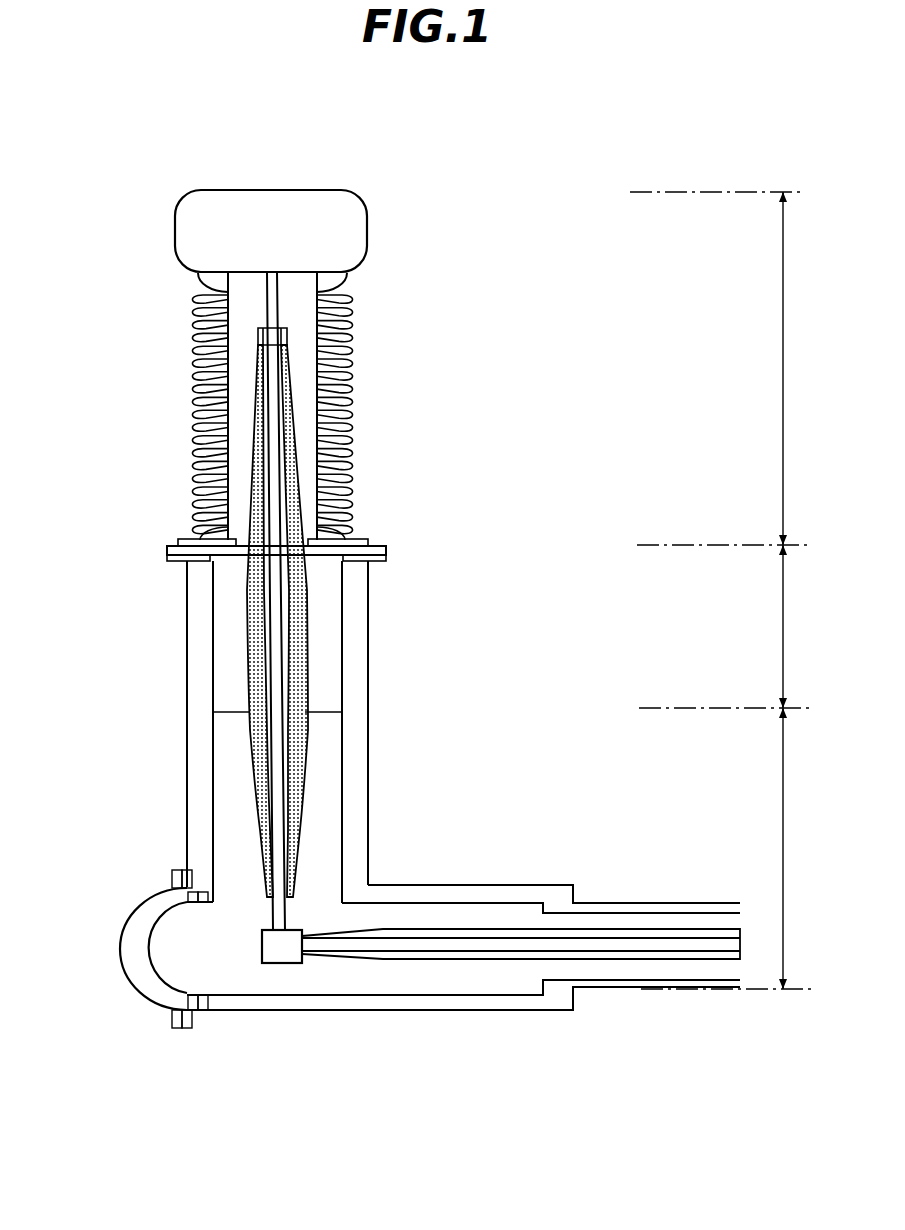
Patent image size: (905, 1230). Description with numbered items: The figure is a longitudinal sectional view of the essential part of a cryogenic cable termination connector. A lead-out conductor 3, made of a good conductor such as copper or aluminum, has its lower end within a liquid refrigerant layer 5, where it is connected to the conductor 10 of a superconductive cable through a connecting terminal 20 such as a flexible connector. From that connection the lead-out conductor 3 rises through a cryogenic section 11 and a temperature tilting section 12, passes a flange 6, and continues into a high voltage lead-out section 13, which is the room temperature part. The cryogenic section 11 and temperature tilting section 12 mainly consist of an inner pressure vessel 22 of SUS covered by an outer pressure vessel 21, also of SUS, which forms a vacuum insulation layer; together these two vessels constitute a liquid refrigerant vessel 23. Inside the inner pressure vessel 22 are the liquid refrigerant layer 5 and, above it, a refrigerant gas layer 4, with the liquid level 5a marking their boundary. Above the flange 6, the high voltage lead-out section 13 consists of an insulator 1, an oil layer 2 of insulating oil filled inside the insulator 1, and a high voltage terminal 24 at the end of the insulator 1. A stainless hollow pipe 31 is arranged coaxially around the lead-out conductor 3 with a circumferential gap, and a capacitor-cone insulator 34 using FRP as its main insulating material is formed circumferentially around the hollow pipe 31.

The insulator 1 is at (352, 331).
The oil layer 2 is at (303, 393).
The lead-out conductor 3 is at (275, 608).
The refrigerant gas layer 4 is at (330, 668).
The liquid refrigerant layer 5 is at (330, 790).
The liquid level 5a is at (323, 710).
The flange 6 is at (385, 547).
The conductor of superconductive cable 10 is at (435, 948).
The cryogenic section 11 is at (783, 825).
The temperature tilting section 12 is at (783, 624).
The high voltage lead-out section 13 is at (782, 355).
The connecting terminal 20 is at (280, 957).
The outer pressure vessel 21 is at (160, 887).
The inner pressure vessel 22 is at (142, 930).
The liquid refrigerant vessel 23 is at (86, 793).
The high voltage terminal 24 is at (362, 200).
The hollow pipe 31 is at (262, 648).
The capacitor-cone insulator 34 is at (308, 627).